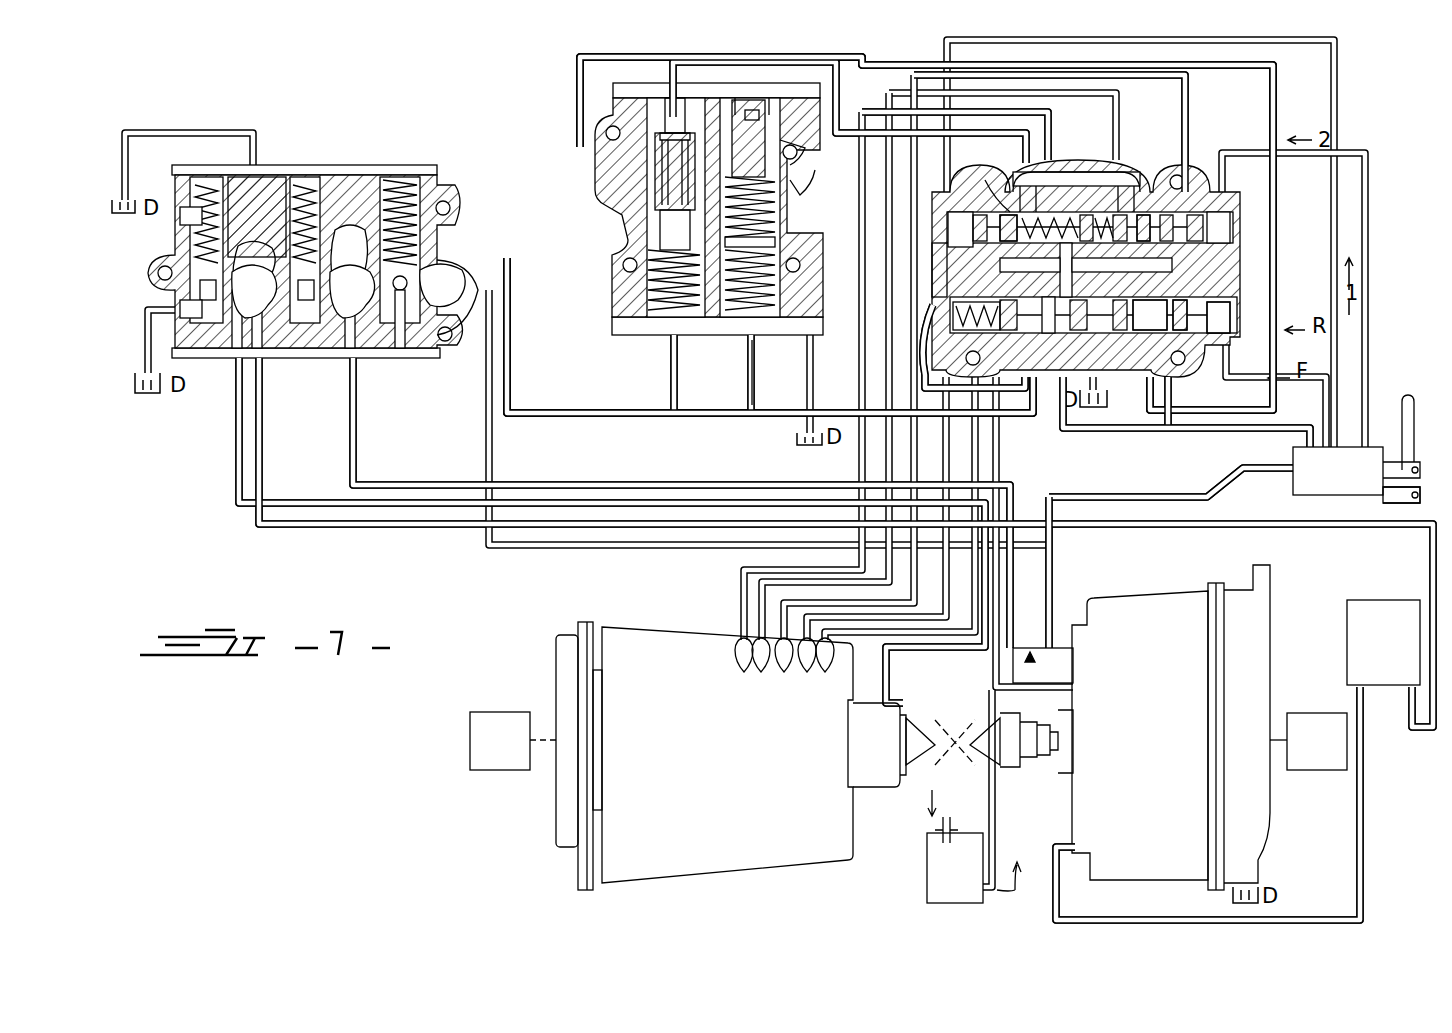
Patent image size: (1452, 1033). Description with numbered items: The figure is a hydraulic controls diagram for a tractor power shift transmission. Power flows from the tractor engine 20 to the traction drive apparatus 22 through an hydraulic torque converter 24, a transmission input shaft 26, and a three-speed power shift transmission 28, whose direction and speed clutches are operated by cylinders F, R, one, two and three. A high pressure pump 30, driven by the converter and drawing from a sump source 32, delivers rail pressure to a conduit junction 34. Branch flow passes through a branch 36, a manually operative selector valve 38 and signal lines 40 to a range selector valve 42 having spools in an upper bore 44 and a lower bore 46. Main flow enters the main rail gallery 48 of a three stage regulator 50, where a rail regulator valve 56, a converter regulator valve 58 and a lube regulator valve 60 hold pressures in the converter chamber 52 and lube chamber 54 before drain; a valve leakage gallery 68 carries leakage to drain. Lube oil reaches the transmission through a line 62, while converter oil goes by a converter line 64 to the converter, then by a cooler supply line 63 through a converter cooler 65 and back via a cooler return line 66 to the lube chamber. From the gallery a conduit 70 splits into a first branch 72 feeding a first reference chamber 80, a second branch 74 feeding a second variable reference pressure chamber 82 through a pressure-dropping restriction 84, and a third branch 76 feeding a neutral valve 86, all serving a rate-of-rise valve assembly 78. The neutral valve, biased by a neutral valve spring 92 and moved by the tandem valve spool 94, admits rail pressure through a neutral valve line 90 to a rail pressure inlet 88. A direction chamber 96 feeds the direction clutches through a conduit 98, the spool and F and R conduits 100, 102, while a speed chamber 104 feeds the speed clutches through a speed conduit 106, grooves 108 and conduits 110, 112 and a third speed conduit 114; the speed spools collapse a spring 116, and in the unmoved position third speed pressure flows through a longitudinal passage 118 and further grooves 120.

The tractor engine 20 is at (1313, 713).
The traction drive apparatus 22 is at (488, 712).
The hydraulic torque converter 24 is at (1147, 605).
The transmission input shaft 26 is at (945, 712).
The three-speed power shift transmission 28 is at (650, 645).
The high pressure pump 30 is at (1032, 650).
The sump source 32 is at (965, 855).
The conduit junction 34 is at (1050, 545).
The branch 36 is at (1062, 495).
The manually operative selector valve 38 is at (1298, 490).
The signal lines 40 is at (1360, 447).
The range selector valve 42 is at (1195, 165).
The upper bore 44 is at (1143, 212).
The lower bore 46 is at (1190, 300).
The main rail gallery 48 is at (468, 312).
The three stage regulator 50 is at (440, 193).
The converter chamber 52 is at (350, 235).
The lube chamber 54 is at (250, 245).
The rail regulator valve 56 is at (452, 275).
The converter regulator valve 58 is at (352, 291).
The lube regulator valve 60 is at (254, 291).
The line 62 is at (608, 500).
The cooler supply line 63 is at (1356, 822).
The converter line 64 is at (553, 483).
The converter cooler 65 is at (1365, 622).
The cooler return line 66 is at (452, 525).
The valve leakage gallery 68 is at (268, 210).
The conduit 70 is at (525, 350).
The first branch 72 is at (668, 370).
The second branch 74 is at (755, 350).
The third branch 76 is at (985, 415).
The rate-of-rise valve assembly 78 is at (605, 147).
The first reference chamber 80 is at (665, 320).
The second variable reference pressure chamber 82 is at (745, 320).
The pressure-dropping restriction 84 is at (748, 370).
The neutral valve 86 is at (953, 270).
The rail pressure inlet 88 is at (805, 148).
The neutral valve line 90 is at (806, 186).
The neutral valve spring 92 is at (974, 347).
The tandem valve spool 94 is at (1230, 310).
The direction chamber 96 is at (715, 118).
The conduit 98 is at (800, 65).
The F conduit 100 is at (1172, 395).
The R conduit 102 is at (1123, 397).
The speed chamber 104 is at (660, 95).
The speed conduit 106 is at (578, 97).
The grooves 108 is at (1010, 185).
The conduit 110 is at (1052, 125).
The conduit 112 is at (1160, 85).
The third speed conduit 114 is at (1180, 103).
The spring 116 is at (1021, 228).
The longitudinal passage 118 is at (1082, 168).
The grooves 120 is at (1154, 315).